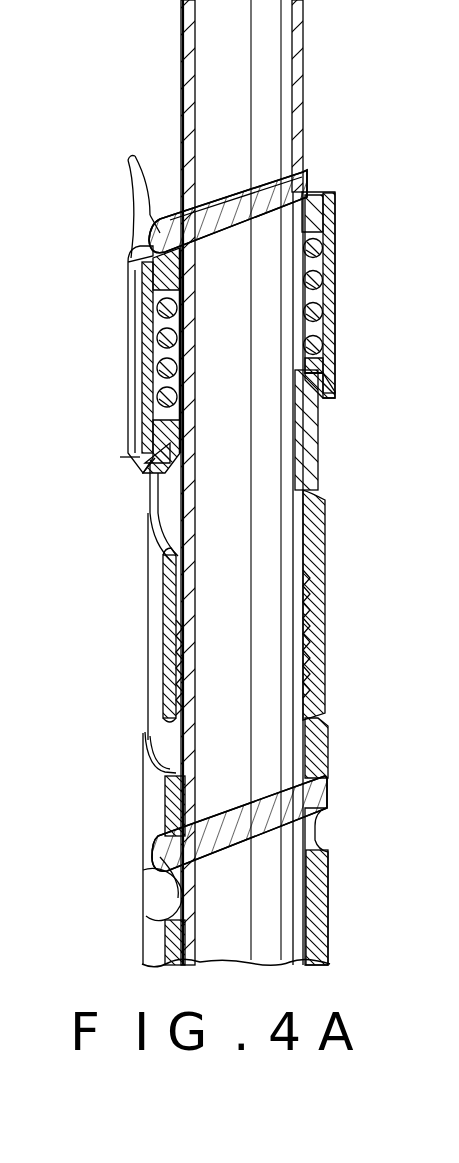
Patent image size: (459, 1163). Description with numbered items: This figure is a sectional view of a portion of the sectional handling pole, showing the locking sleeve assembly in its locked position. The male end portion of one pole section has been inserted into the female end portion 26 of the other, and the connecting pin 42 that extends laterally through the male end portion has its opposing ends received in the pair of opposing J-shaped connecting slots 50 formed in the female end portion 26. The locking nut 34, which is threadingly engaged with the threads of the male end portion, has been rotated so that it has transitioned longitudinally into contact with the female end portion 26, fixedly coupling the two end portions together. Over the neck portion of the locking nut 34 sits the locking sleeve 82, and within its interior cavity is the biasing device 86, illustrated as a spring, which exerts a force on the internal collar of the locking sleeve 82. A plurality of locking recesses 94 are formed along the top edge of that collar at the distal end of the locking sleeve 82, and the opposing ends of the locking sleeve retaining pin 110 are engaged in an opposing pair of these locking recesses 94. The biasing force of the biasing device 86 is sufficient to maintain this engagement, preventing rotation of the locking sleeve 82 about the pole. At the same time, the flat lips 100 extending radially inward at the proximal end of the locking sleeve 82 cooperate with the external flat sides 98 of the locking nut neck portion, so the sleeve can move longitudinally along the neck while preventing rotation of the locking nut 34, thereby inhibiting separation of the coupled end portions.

The female end portion 26 is at (315, 905).
The locking nut 34 is at (150, 617).
The connecting pin 42 is at (310, 793).
The J-shaped connecting slot 50 is at (122, 872).
The locking sleeve 82 is at (98, 355).
The biasing device 86 is at (323, 282).
The locking recess 94 is at (128, 158).
The external flat side 98 is at (158, 507).
The flat lip 100 is at (140, 457).
The locking sleeve retaining pin 110 is at (275, 176).